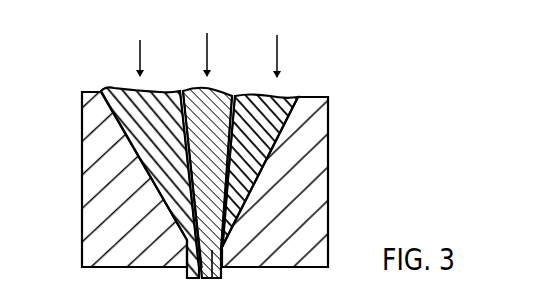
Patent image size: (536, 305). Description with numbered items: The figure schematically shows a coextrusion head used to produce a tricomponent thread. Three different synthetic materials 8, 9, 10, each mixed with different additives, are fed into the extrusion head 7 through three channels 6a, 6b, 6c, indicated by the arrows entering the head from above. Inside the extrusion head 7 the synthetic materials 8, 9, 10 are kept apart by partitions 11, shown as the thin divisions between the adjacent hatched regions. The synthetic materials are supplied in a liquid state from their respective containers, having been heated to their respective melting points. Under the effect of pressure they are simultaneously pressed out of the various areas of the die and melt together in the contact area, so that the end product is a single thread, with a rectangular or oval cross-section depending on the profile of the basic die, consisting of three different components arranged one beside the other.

The extrusion head 7 is at (95, 248).
The synthetic material 8 is at (170, 183).
The synthetic material 9 is at (227, 198).
The synthetic material 10 is at (268, 133).
The partition 11 is at (179, 90).
The channel 6a is at (126, 58).
The channel 6b is at (221, 54).
The channel 6c is at (291, 56).